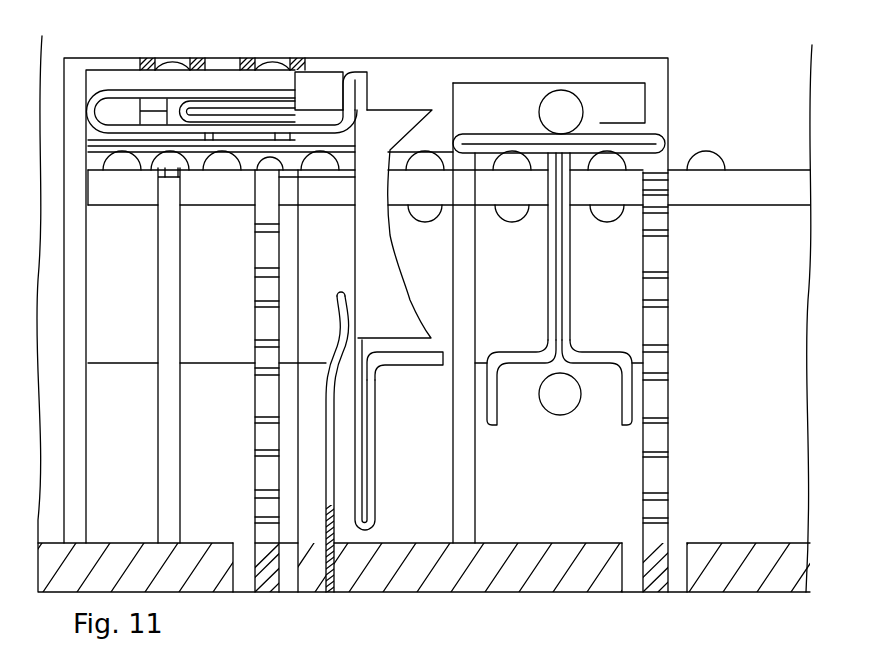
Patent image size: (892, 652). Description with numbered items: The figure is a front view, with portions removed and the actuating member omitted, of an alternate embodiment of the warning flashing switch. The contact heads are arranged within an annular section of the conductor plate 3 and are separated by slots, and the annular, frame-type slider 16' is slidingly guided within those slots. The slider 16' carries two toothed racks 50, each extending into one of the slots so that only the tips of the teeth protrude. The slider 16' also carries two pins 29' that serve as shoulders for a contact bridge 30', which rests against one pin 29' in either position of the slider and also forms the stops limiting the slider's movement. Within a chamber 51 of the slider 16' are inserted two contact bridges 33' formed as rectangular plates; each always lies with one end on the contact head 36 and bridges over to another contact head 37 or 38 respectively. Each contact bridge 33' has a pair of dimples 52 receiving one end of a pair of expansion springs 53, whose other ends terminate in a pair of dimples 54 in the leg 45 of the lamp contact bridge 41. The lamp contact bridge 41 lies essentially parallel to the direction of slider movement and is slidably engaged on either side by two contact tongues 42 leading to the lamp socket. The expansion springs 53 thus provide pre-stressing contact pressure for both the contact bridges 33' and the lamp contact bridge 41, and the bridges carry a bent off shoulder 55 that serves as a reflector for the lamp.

The slider 16' is at (404, 325).
The conductor plate 3 is at (778, 193).
The pin 29' is at (581, 279).
The contact bridge 30' is at (559, 279).
The contact bridge 33' is at (219, 199).
The contact head 36 is at (222, 157).
The contact head 37 is at (358, 200).
The contact head 38 is at (123, 157).
The lamp contact bridge 41 is at (376, 425).
The contact tongue 42 is at (326, 432).
The leg 45 is at (148, 76).
The toothed rack 50 is at (255, 405).
The chamber 51 is at (367, 80).
The dimple 52 is at (298, 251).
The expansion spring 53 is at (350, 126).
The dimple 54 is at (270, 95).
The bent off shoulder 55 is at (422, 316).